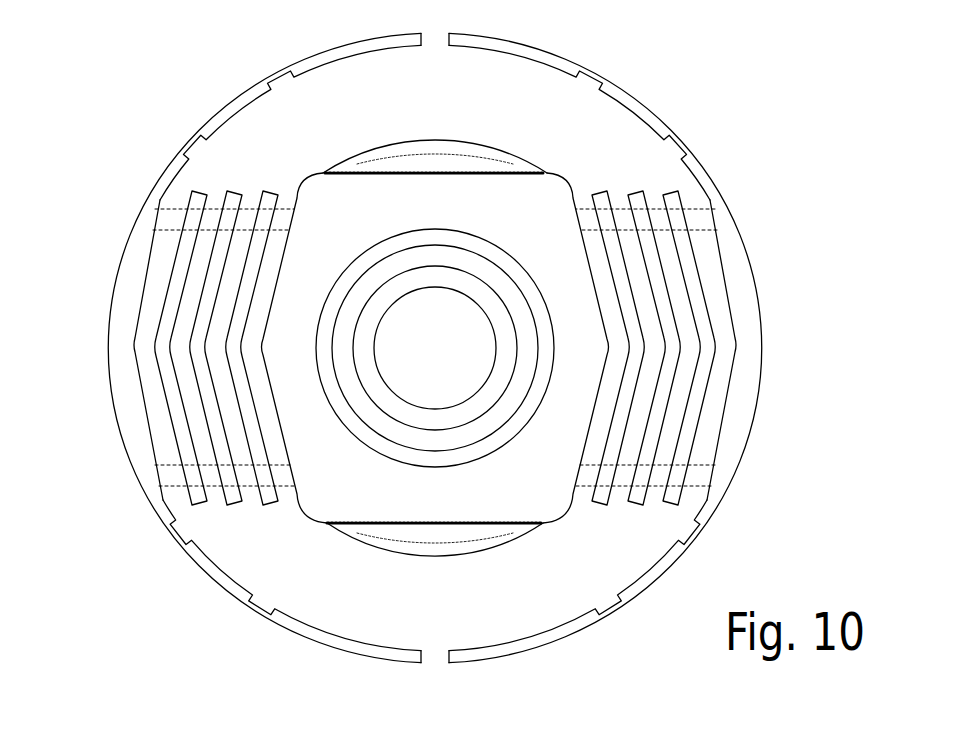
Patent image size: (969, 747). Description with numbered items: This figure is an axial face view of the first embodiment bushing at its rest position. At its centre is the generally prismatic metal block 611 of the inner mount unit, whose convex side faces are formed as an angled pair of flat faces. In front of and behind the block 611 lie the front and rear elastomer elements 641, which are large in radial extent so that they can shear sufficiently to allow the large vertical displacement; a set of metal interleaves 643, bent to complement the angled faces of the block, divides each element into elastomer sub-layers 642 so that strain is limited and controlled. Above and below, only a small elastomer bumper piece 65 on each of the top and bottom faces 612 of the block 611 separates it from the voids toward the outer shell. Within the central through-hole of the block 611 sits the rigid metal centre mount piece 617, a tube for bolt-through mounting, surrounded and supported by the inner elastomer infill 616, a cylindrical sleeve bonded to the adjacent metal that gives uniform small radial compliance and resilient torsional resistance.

The metal block 611 is at (530, 490).
The top and bottom faces 612 is at (478, 168).
The elastomer bumper piece 65 is at (403, 147).
The inner elastomer infill 616 is at (362, 290).
The centre mount piece 617 is at (500, 316).
The front and rear elastomer elements 641 is at (435, 264).
The elastomer sub-layers 642 is at (193, 412).
The metal interleaves 643 is at (160, 318).